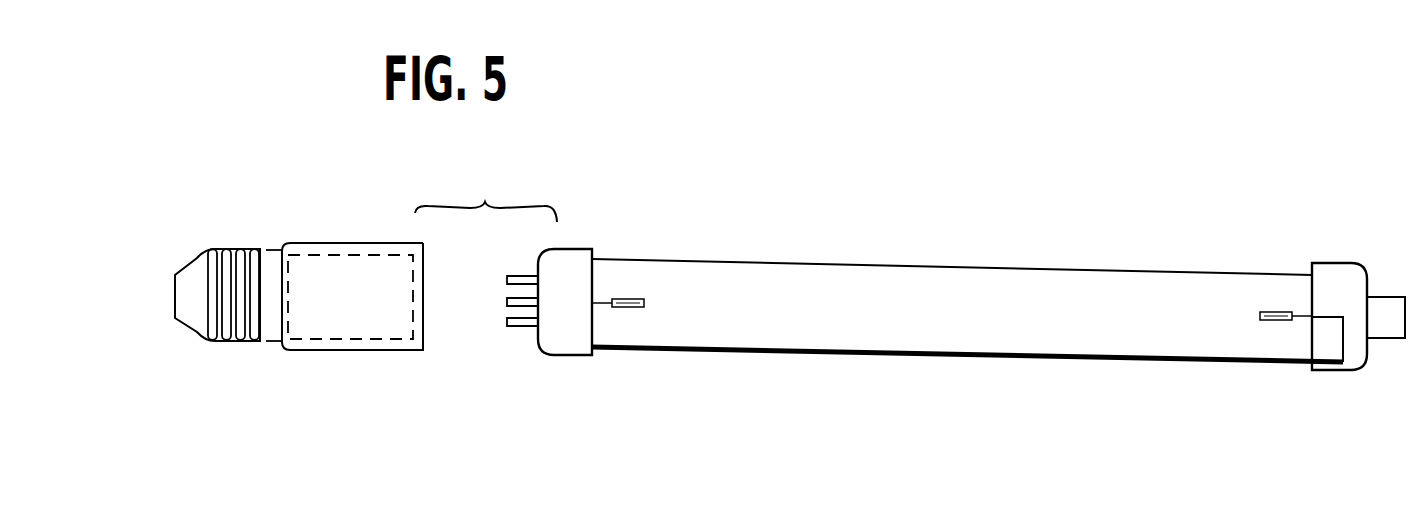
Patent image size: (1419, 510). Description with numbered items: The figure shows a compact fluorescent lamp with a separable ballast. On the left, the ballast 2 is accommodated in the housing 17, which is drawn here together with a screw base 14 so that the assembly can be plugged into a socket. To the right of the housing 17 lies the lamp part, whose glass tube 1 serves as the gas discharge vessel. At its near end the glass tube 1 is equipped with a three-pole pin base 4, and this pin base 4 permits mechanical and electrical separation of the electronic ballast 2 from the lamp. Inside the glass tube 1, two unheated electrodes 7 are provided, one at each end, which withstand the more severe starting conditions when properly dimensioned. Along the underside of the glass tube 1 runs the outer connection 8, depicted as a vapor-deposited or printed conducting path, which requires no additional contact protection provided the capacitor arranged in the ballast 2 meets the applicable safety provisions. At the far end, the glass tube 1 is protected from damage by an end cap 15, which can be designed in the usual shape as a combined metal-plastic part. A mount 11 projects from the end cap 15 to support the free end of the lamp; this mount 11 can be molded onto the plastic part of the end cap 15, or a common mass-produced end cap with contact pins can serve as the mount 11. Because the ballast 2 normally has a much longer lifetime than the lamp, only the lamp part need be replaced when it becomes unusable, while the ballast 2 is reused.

The glass tube 1 is at (983, 323).
The ballast 2 is at (338, 322).
The pin base 4 is at (517, 302).
The unheated electrodes 7 is at (645, 307).
The outer connection 8 is at (823, 358).
The mount 11 is at (1385, 313).
The screw base 14 is at (218, 342).
The end cap 15 is at (1345, 282).
The housing 17 is at (400, 352).